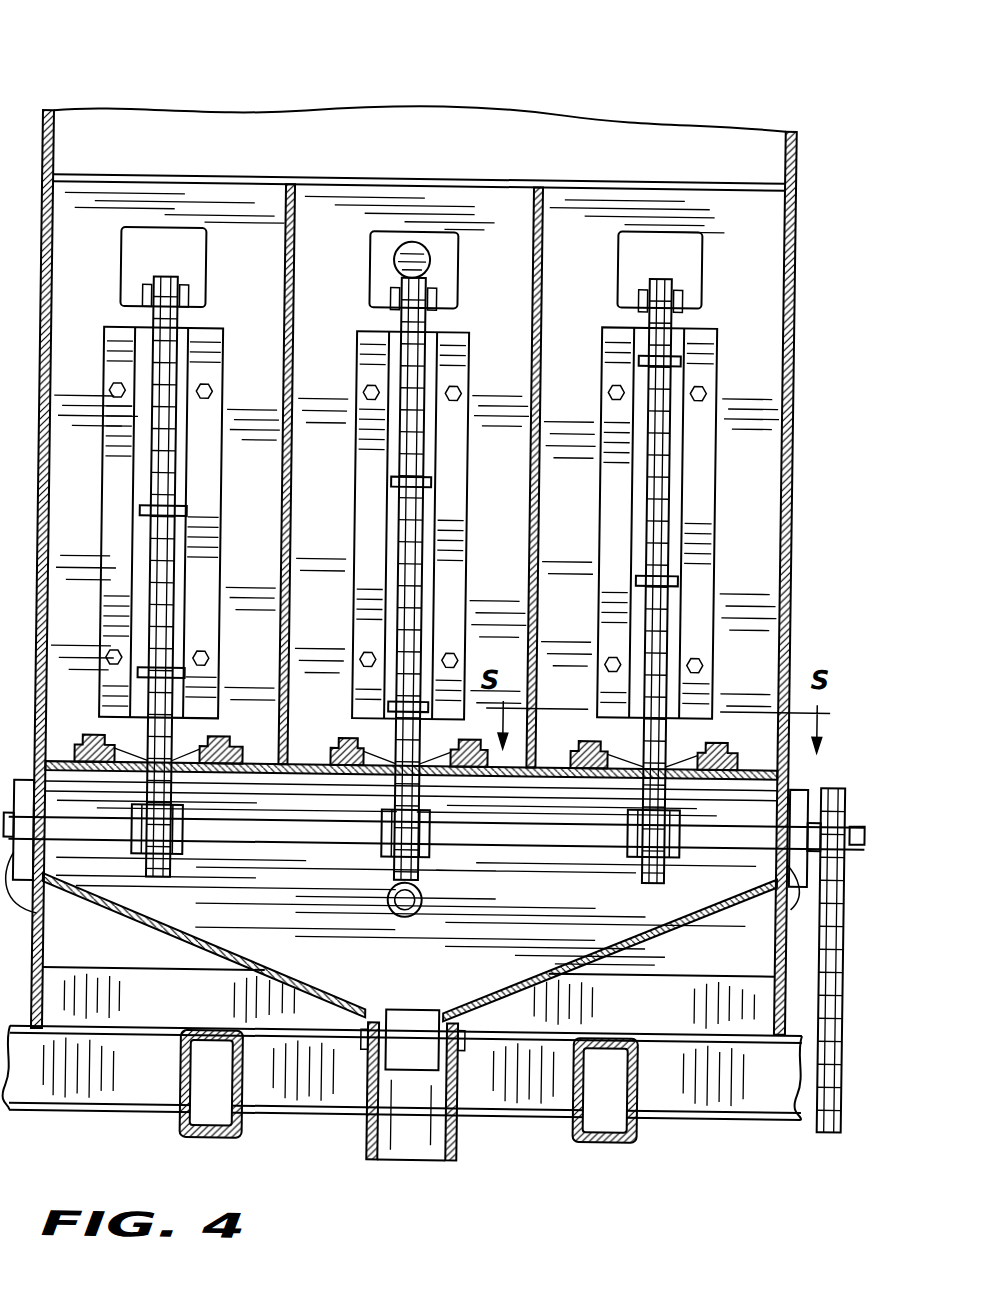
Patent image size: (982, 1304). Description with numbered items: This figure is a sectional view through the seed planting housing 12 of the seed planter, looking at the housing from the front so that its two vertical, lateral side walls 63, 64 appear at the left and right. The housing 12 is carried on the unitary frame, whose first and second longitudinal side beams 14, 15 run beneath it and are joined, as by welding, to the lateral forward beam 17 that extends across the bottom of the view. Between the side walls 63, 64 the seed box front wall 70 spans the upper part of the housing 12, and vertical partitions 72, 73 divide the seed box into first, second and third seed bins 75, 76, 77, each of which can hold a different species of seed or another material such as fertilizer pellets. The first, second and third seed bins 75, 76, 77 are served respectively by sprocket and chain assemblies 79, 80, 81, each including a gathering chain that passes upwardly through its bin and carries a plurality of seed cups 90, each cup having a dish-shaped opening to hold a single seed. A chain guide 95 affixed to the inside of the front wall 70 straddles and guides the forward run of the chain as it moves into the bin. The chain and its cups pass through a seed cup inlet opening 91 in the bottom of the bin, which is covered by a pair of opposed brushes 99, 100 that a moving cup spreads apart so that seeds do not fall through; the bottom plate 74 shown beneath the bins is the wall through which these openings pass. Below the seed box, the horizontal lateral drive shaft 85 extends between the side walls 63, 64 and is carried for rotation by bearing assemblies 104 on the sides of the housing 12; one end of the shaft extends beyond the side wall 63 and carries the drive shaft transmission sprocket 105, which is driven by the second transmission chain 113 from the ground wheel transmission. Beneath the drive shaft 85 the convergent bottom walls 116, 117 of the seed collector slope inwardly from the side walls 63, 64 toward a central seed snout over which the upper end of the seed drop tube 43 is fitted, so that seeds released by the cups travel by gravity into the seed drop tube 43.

The seed planting housing 12 is at (794, 333).
The first longitudinal side beam 14 is at (641, 1138).
The second longitudinal side beam 15 is at (248, 1130).
The lateral forward beam 17 is at (752, 1100).
The seed drop tube 43 is at (464, 1132).
The first vertical lateral side wall 63 is at (792, 192).
The second vertical lateral side wall 64 is at (40, 143).
The seed box front wall 70 is at (584, 217).
The vertical partition 72 is at (540, 342).
The vertical partition 73 is at (292, 217).
The bottom plate 74 is at (565, 777).
The first seed bin 75 is at (589, 573).
The second seed bin 76 is at (517, 585).
The third seed bin 77 is at (268, 595).
The first sprocket and chain assembly 79 is at (682, 519).
The second sprocket and chain assembly 80 is at (395, 543).
The third sprocket and chain assembly 81 is at (145, 572).
The drive shaft 85 is at (530, 835).
The seed cup 90 is at (680, 362).
The seed cup inlet opening 91 is at (634, 785).
The chain guide 95 is at (610, 368).
The brush 99 is at (692, 780).
The brush 100 is at (630, 776).
The bearing assembly 104 is at (72, 928).
The drive shaft transmission sprocket 105 is at (815, 878).
The second transmission chain 113 is at (850, 1105).
The convergent bottom wall 116 is at (628, 948).
The convergent bottom wall 117 is at (170, 941).